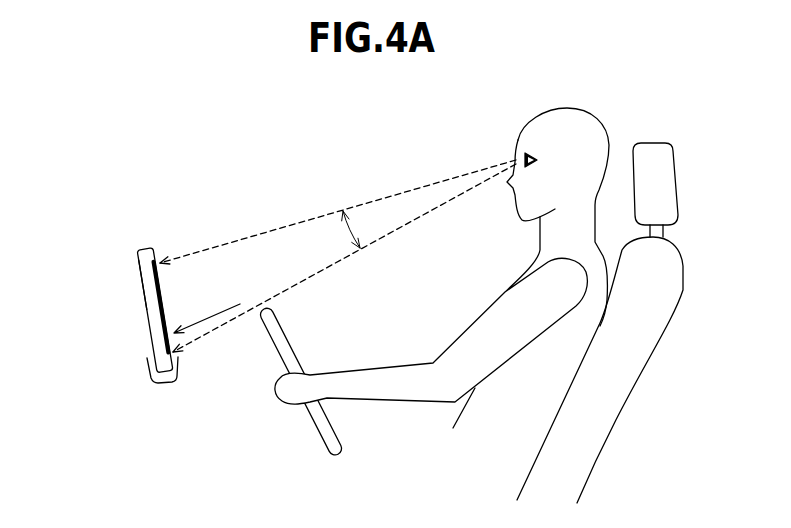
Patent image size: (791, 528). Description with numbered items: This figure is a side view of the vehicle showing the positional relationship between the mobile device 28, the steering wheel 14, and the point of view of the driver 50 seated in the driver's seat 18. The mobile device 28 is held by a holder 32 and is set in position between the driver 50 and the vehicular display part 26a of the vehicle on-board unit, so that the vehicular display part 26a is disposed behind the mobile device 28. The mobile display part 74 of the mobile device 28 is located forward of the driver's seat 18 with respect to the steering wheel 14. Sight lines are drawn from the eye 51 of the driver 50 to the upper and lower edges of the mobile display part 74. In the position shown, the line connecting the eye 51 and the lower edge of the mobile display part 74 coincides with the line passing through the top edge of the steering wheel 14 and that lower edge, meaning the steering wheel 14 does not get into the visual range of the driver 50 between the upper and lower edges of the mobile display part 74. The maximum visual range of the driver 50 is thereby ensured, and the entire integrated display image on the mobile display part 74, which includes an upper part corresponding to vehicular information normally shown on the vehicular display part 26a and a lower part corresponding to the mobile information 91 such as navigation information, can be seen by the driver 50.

The steering wheel 14 is at (292, 340).
The driver's seat 18 is at (620, 377).
The vehicular display part 26a is at (176, 267).
The mobile device 28 is at (145, 248).
The holder 32 is at (170, 384).
The driver 50 is at (567, 107).
The eye 51 is at (530, 152).
The mobile display part 74 is at (145, 279).
The mobile information 91 is at (221, 307).